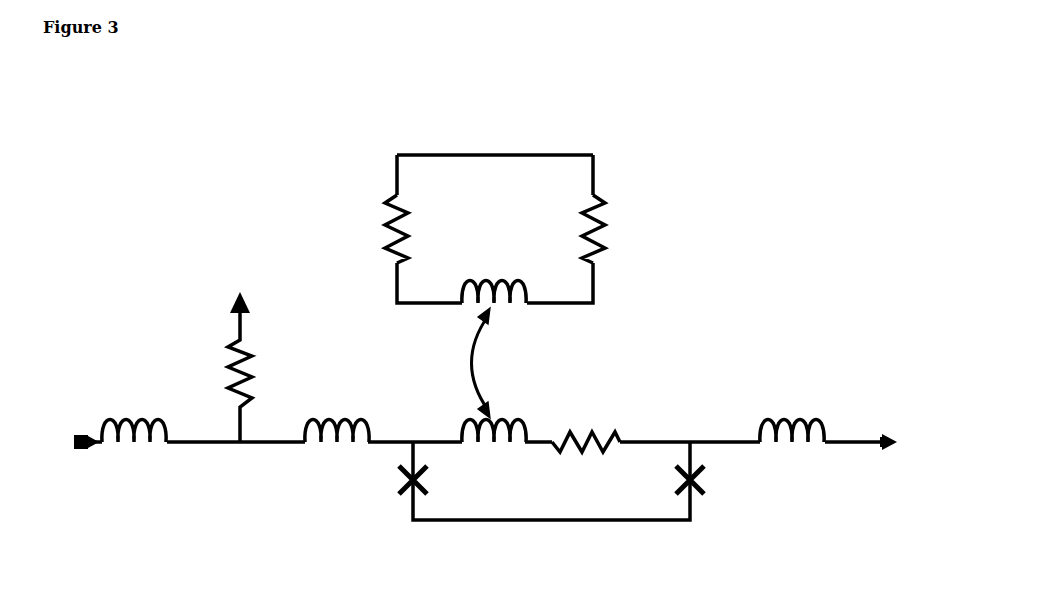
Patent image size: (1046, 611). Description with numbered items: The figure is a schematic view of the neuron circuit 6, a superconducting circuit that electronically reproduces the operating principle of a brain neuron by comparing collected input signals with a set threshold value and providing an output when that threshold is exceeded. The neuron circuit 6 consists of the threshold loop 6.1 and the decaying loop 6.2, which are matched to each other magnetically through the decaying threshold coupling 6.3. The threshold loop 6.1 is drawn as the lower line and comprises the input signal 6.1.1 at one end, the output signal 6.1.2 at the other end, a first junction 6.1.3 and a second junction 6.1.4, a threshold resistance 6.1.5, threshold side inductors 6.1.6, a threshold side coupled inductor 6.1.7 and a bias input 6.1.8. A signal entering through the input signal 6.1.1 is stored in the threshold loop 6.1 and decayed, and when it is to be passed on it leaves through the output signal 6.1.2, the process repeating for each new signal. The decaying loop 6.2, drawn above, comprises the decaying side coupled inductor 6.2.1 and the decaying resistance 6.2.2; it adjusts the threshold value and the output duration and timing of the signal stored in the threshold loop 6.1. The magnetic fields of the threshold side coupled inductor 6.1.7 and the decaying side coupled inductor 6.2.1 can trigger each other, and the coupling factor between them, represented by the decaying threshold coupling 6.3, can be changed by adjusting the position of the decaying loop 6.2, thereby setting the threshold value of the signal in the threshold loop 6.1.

The neuron circuit 6 is at (178, 117).
The threshold loop 6.1 is at (673, 413).
The input signal 6.1.1 is at (87, 436).
The output signal 6.1.2 is at (886, 432).
The first junction 6.1.3 is at (398, 485).
The second junction 6.1.4 is at (697, 482).
The threshold resistance 6.1.5 is at (598, 432).
The threshold side inductor 6.1.6 is at (140, 443).
The threshold side coupled inductor 6.1.7 is at (472, 420).
The bias input 6.1.8 is at (229, 343).
The decaying loop 6.2 is at (611, 137).
The decaying side coupled inductor 6.2.1 is at (478, 282).
The decaying resistance 6.2.2 is at (604, 232).
The decaying threshold coupling 6.3 is at (483, 367).